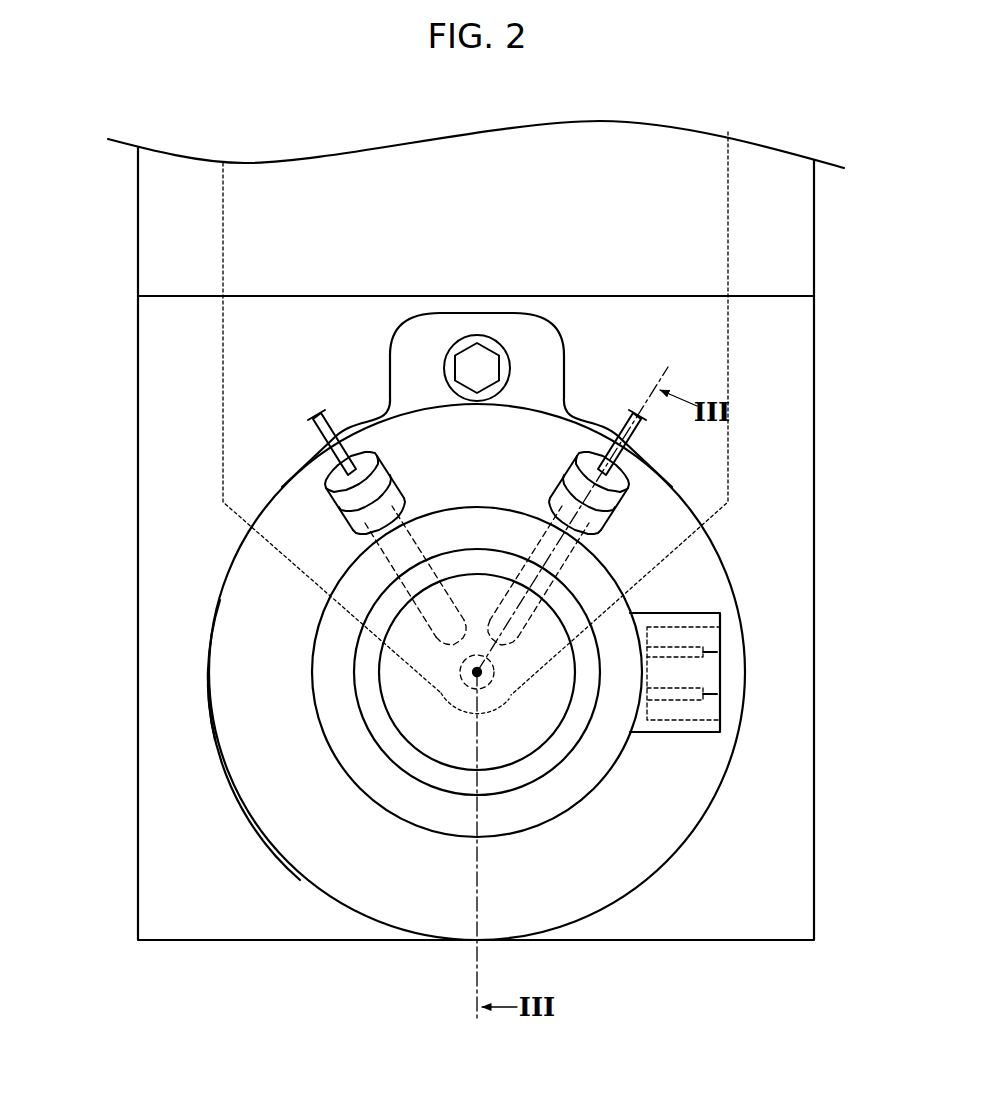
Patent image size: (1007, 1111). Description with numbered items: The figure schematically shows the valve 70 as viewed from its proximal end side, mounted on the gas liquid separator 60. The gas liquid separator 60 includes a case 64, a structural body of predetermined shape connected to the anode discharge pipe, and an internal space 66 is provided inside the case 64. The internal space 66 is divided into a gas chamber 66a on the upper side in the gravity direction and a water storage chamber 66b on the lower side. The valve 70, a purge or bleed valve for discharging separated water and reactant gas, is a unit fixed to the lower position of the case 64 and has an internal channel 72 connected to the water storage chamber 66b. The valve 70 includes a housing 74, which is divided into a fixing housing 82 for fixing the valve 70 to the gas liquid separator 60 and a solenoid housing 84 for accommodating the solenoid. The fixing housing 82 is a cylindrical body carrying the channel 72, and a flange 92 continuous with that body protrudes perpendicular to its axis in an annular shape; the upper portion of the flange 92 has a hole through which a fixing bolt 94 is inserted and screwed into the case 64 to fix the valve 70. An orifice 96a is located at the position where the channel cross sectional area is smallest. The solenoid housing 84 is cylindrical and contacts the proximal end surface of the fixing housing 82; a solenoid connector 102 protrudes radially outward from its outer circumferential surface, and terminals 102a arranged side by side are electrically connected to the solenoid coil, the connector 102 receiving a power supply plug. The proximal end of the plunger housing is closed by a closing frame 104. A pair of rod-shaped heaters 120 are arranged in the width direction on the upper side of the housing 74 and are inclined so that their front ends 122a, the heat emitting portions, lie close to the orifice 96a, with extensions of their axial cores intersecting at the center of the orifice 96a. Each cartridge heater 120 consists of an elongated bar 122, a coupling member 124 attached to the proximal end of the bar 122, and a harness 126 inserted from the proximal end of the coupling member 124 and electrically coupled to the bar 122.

The gas liquid separator 60 is at (431, 544).
The case 64 is at (137, 247).
The internal space 66 is at (476, 408).
The gas chamber 66a is at (358, 180).
The water storage chamber 66b is at (247, 502).
The valve 70 is at (306, 892).
The internal channel 72 is at (485, 733).
The housing 74 is at (410, 693).
The fixing housing 82 is at (233, 785).
The solenoid housing 84 is at (323, 730).
The flange 92 is at (208, 698).
The fixing bolt 94 is at (505, 352).
The orifice 96a is at (488, 690).
The solenoid connector 102 is at (714, 693).
The terminals 102a is at (717, 652).
The closing frame 104 is at (353, 672).
The heaters 120 is at (476, 447).
The elongated bar 122 is at (477, 600).
The front ends 122a is at (446, 654).
The coupling member 124 is at (395, 485).
The harness 126 is at (317, 432).